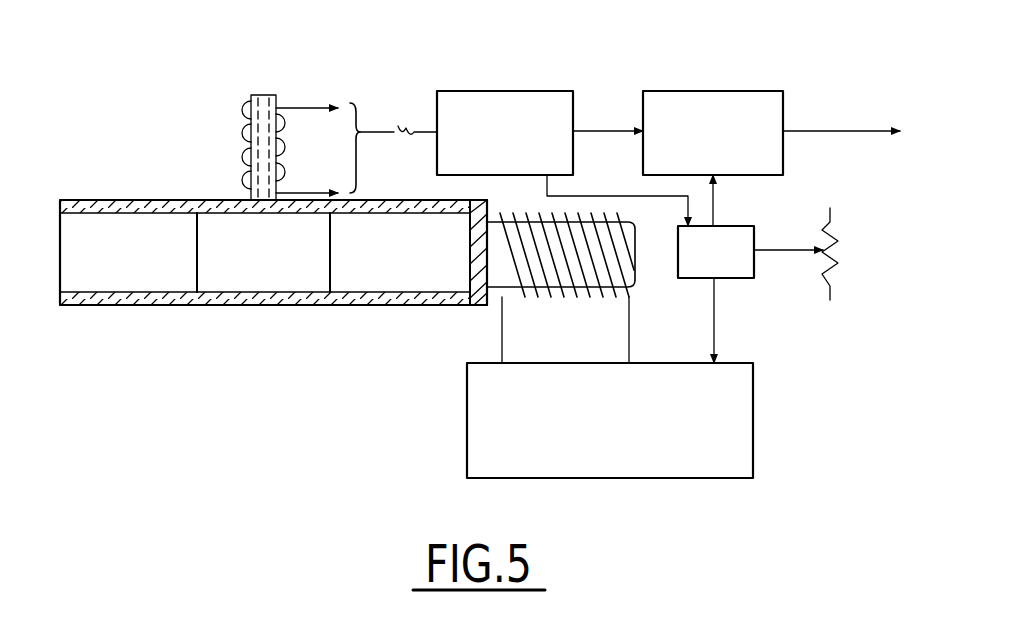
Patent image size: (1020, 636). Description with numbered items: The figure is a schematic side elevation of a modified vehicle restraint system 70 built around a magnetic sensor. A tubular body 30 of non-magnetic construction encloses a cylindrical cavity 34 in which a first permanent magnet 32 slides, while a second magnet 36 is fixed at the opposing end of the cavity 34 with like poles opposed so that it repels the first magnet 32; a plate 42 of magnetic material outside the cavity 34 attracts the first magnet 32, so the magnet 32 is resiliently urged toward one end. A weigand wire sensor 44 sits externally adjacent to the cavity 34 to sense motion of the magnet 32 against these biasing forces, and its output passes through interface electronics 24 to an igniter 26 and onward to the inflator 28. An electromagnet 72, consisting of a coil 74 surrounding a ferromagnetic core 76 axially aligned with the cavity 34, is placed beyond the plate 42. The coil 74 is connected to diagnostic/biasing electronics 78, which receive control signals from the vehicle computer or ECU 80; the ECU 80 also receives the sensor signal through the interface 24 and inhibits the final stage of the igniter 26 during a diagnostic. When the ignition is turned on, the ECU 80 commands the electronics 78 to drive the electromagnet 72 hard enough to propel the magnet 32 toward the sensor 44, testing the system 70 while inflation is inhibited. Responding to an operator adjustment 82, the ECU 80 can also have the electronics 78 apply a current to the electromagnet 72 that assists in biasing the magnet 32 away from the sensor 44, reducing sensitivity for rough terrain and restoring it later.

The interface electronics 24 is at (510, 77).
The igniter 26 is at (728, 77).
The inflator 28 is at (841, 116).
The tubular body 30 is at (148, 189).
The first permanent magnet 32 is at (375, 280).
The cylindrical cavity 34 is at (250, 275).
The second magnet 36 is at (127, 282).
The plate 42 is at (480, 308).
The weigand wire sensor 44 is at (206, 110).
The vehicle restraint system 70 is at (122, 130).
The electromagnet 72 is at (588, 314).
The coil 74 is at (587, 224).
The core 76 is at (637, 282).
The electronics 78 is at (705, 478).
The ECU 80 is at (754, 238).
The operator adjustment 82 is at (840, 258).